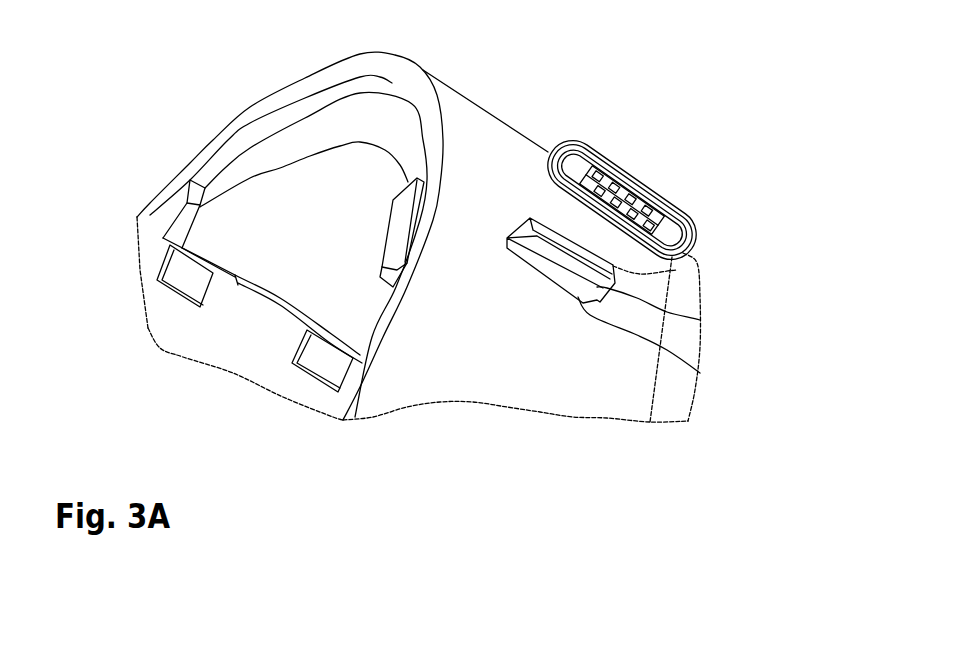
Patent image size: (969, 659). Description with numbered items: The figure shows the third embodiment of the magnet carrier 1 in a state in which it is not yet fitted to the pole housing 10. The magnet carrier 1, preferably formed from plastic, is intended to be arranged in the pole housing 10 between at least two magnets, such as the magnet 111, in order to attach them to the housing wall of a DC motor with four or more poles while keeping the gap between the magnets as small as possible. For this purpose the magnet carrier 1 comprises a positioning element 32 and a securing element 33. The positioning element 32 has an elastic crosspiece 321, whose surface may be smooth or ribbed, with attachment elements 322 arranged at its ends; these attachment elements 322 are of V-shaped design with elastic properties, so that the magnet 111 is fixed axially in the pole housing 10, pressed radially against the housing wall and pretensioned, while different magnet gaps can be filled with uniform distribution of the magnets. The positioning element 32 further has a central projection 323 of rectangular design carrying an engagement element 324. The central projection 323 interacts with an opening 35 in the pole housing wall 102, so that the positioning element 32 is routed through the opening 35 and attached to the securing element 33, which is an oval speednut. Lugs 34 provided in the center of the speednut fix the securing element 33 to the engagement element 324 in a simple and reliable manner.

The magnet carrier 1 is at (655, 75).
The pole housing 10 is at (170, 183).
The magnet 111 is at (273, 158).
The positioning element 32 is at (153, 215).
The crosspiece 321 is at (235, 287).
The attachment element 322 is at (160, 285).
The central projection 323 is at (677, 270).
The engagement element 324 is at (700, 320).
The securing element 33 is at (700, 228).
The lugs 34 is at (647, 198).
The opening 35 is at (700, 373).
The pole housing wall 102 is at (568, 387).